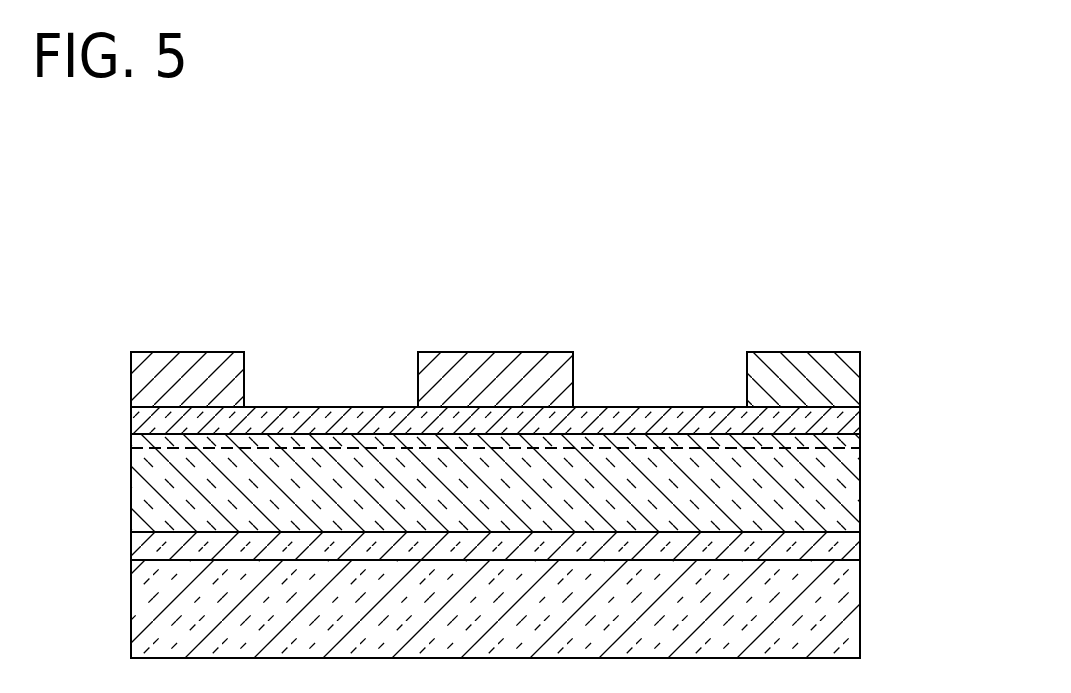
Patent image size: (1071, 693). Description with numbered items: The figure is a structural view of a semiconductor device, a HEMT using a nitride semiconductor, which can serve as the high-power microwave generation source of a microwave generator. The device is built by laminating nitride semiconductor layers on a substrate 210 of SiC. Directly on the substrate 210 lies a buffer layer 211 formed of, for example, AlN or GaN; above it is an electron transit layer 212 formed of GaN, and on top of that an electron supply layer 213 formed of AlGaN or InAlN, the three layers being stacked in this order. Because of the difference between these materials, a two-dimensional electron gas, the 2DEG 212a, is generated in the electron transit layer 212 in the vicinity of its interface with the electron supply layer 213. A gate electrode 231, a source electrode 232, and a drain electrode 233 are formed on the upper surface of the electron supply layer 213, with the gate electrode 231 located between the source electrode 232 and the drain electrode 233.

The substrate 210 is at (845, 607).
The buffer layer 211 is at (845, 548).
The electron transit layer 212 is at (845, 483).
The 2DEG 212a is at (156, 448).
The electron supply layer 213 is at (848, 420).
The gate electrode 231 is at (494, 365).
The source electrode 232 is at (190, 365).
The drain electrode 233 is at (805, 365).